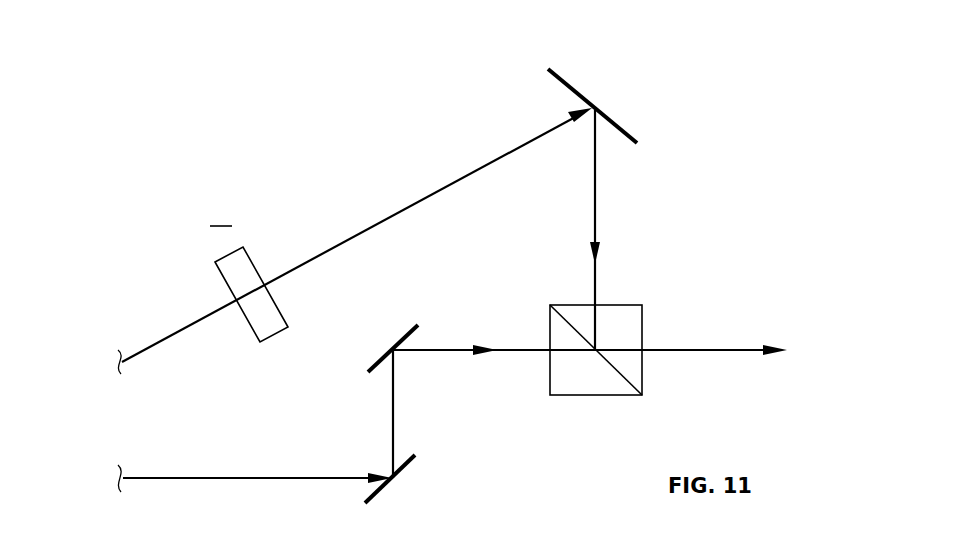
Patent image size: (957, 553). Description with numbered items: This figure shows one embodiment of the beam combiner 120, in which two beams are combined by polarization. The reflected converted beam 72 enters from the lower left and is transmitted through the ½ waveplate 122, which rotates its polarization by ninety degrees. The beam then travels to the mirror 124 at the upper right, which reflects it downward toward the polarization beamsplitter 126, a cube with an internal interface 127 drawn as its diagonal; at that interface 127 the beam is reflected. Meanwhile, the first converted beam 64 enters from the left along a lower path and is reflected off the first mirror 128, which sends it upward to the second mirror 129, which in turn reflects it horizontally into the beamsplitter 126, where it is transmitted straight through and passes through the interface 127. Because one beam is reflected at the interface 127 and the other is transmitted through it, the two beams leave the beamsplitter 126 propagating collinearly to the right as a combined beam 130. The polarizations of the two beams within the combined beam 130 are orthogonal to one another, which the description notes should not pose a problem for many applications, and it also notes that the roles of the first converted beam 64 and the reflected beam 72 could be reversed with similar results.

The first converted beam 64 is at (246, 478).
The reflected converted beam 72 is at (170, 339).
The beam combiner 120 is at (392, 162).
The ½ waveplate 122 is at (218, 278).
The mirror 124 is at (570, 83).
The polarization beamsplitter 126 is at (626, 305).
The internal interface 127 is at (615, 370).
The first mirror 128 is at (408, 468).
The second mirror 129 is at (407, 333).
The combined beam 130 is at (707, 348).